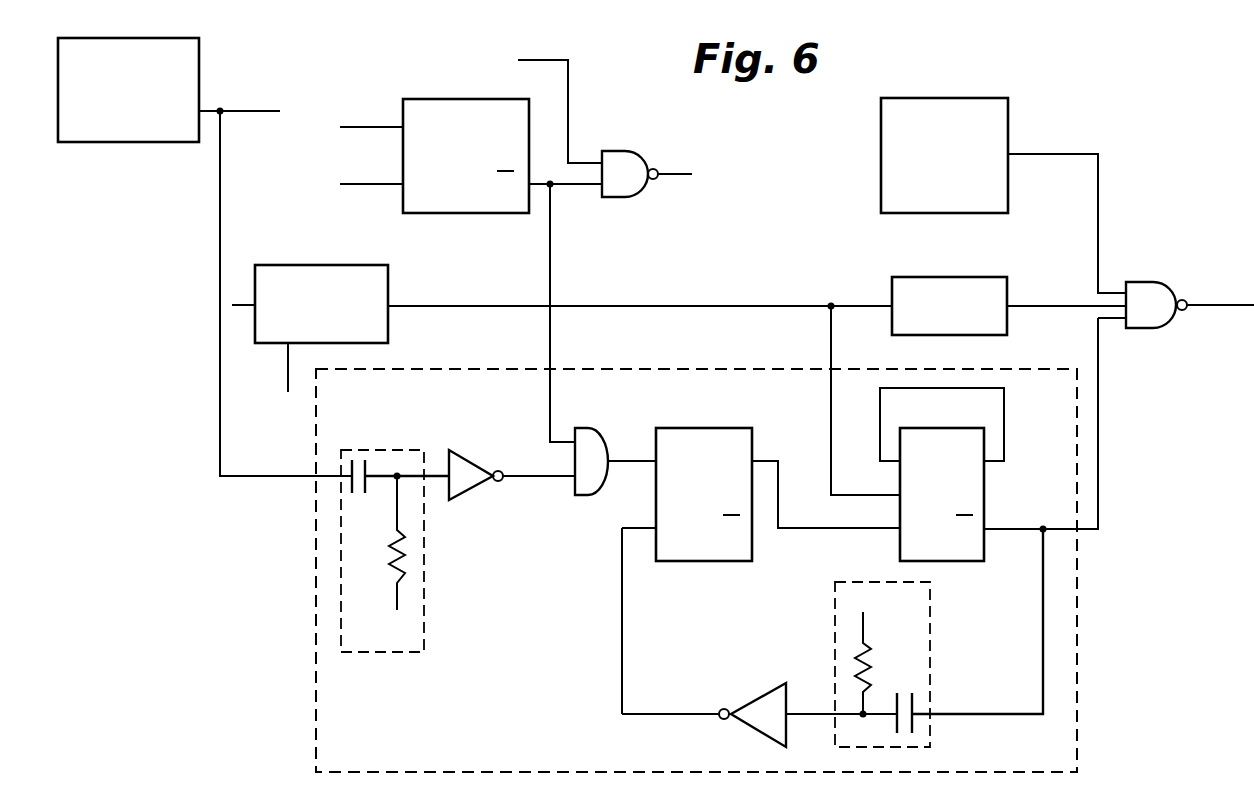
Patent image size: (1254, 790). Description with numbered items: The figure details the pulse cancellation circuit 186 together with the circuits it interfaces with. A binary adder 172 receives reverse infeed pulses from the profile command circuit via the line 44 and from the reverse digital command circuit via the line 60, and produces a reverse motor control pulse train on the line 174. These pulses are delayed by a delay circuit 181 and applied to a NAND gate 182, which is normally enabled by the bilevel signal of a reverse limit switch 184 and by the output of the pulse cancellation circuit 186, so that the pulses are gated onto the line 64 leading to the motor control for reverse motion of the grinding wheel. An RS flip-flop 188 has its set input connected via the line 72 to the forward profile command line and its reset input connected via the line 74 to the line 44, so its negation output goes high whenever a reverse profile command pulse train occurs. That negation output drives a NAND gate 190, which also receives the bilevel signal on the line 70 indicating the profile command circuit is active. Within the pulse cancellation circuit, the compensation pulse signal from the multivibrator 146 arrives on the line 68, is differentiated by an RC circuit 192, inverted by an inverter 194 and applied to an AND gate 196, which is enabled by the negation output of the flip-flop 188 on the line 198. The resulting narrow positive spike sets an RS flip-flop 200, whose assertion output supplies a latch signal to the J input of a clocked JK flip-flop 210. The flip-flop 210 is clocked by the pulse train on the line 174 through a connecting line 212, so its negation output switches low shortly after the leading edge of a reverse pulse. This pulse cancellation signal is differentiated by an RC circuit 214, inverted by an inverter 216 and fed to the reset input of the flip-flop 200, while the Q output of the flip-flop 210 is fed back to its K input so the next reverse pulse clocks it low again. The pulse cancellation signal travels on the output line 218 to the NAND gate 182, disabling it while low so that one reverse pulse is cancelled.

The multivibrator 146 is at (200, 62).
The line 68 is at (254, 479).
The RS flip-flop 188 is at (483, 99).
The line 72 is at (370, 126).
The line 74 is at (368, 184).
The line 70 is at (568, 88).
The NAND gate 190 is at (629, 160).
The line 198 is at (550, 240).
The reverse limit switch 184 is at (925, 98).
The delay circuit 181 is at (953, 250).
The NAND gate 182 is at (1150, 282).
The line 64 is at (1212, 304).
The output line 218 is at (1100, 398).
The binary adder 172 is at (360, 265).
The line 44 is at (240, 305).
The line 60 is at (286, 372).
The line 174 is at (663, 304).
The connecting line 212 is at (831, 330).
The pulse cancellation circuit 186 is at (348, 716).
The RC circuit 192 is at (368, 448).
The inverter 194 is at (470, 490).
The AND gate 196 is at (582, 428).
The RS flip-flop 200 is at (712, 428).
The clocked JK flip-flop 210 is at (920, 428).
The RC circuit 214 is at (835, 610).
The inverter 216 is at (765, 690).